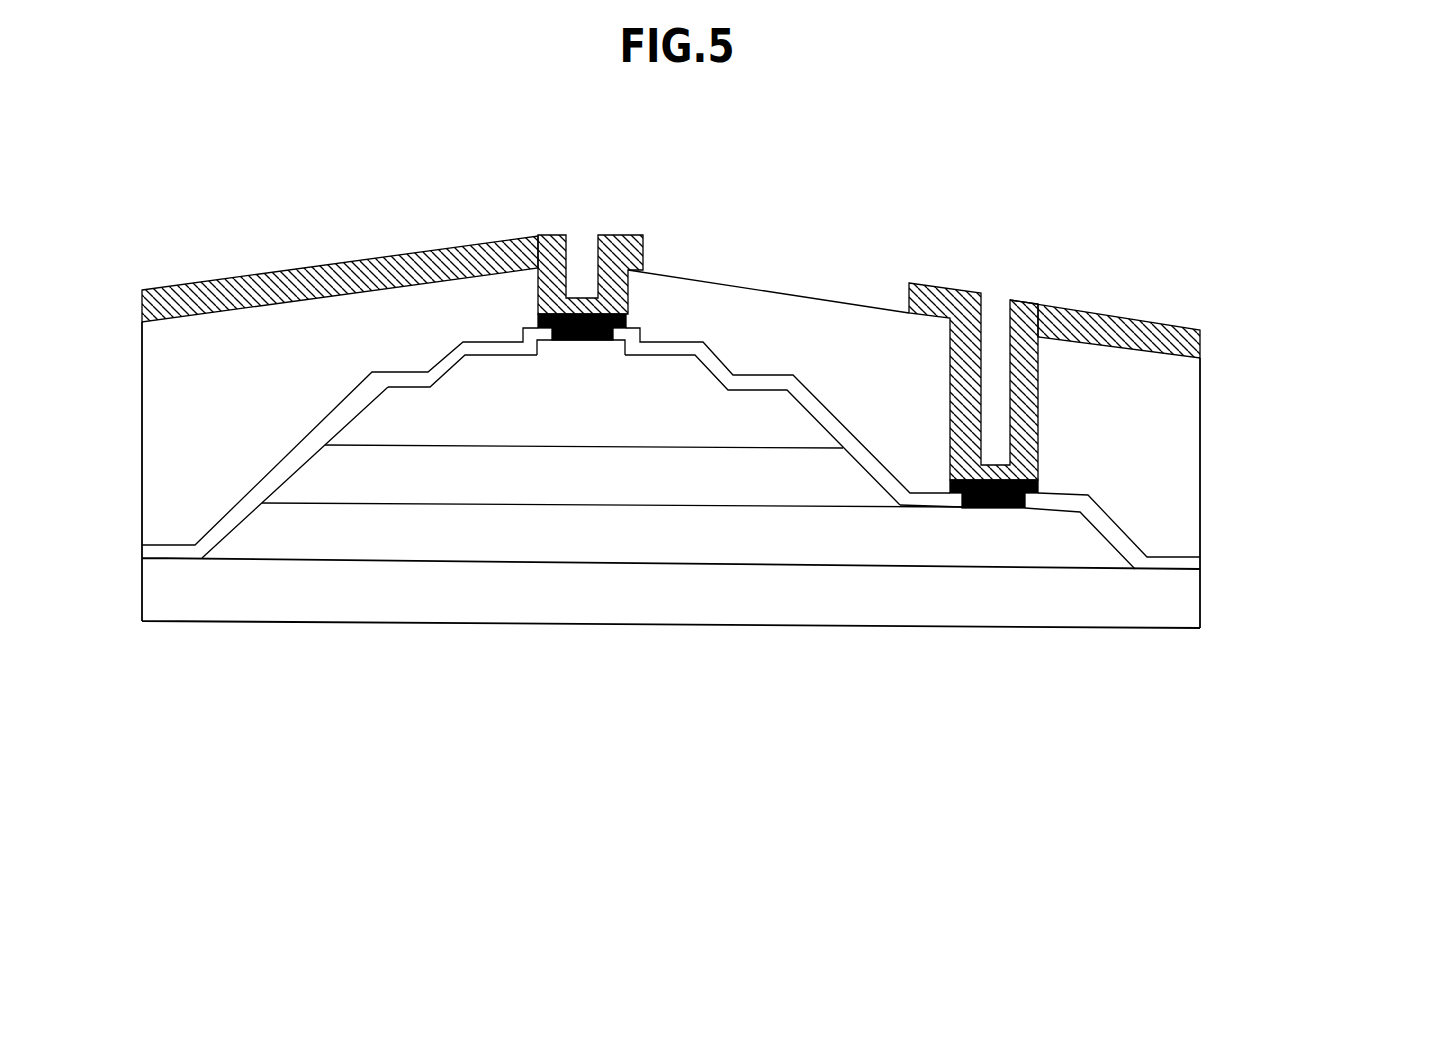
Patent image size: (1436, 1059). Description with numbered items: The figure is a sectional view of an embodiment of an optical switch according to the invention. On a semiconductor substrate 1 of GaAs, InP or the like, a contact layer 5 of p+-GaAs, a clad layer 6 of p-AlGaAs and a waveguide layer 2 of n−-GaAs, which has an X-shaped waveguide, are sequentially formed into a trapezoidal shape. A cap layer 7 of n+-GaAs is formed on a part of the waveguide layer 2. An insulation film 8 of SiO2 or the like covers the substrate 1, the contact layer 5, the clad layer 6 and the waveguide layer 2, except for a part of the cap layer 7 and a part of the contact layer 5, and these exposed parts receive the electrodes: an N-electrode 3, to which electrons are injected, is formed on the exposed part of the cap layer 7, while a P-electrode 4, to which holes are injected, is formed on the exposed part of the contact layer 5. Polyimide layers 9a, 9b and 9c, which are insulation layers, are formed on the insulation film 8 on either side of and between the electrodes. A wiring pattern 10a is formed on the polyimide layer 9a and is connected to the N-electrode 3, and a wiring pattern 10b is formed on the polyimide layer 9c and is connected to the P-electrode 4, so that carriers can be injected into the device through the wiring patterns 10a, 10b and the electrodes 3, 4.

The semiconductor substrate 1 is at (1098, 600).
The waveguide layer 2 is at (446, 405).
The N-electrode 3 is at (628, 318).
The P-electrode 4 is at (950, 478).
The contact layer 5 is at (470, 545).
The clad layer 6 is at (552, 478).
The cap layer 7 is at (622, 348).
The insulation film 8 is at (403, 377).
The polyimide layer 9a is at (180, 497).
The polyimide layer 9b is at (870, 432).
The polyimide layer 9c is at (1167, 507).
The wiring pattern 10a is at (258, 275).
The wiring pattern 10b is at (1173, 332).